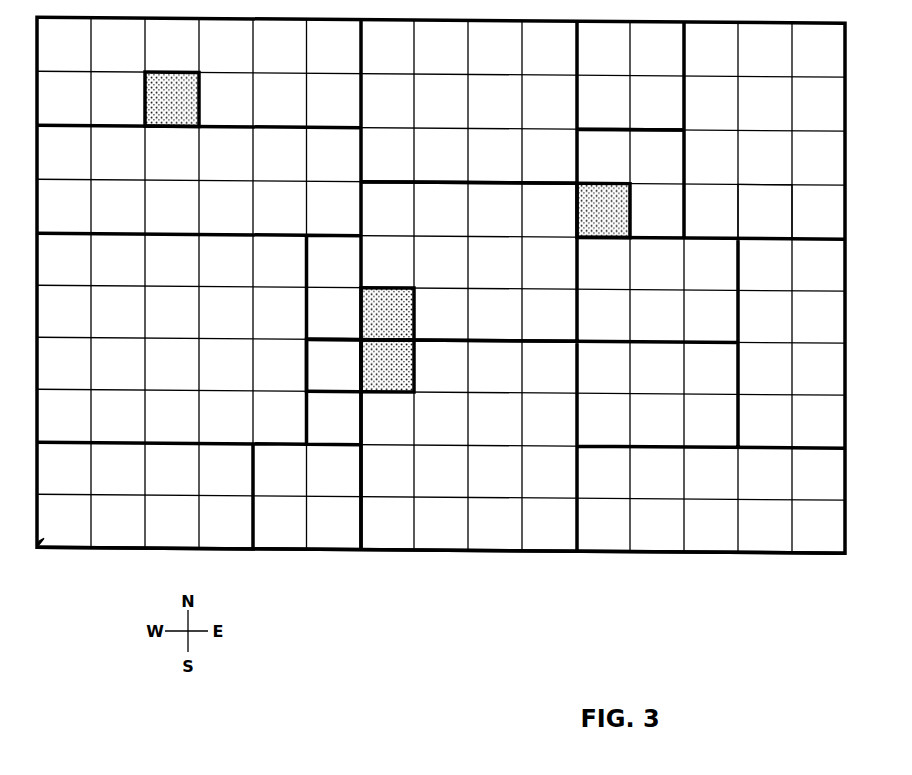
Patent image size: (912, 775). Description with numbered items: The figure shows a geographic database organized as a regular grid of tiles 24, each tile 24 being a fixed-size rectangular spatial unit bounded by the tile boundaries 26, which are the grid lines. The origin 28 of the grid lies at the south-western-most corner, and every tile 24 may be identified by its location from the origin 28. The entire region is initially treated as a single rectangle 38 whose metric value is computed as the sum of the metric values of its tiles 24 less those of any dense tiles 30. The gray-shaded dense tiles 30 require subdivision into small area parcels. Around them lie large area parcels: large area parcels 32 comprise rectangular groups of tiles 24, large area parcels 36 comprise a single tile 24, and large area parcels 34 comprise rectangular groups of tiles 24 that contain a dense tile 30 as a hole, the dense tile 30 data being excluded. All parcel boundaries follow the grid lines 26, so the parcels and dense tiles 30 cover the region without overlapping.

The tile 24 is at (433, 525).
The tile boundaries 26 is at (790, 200).
The origin 28 is at (41, 543).
The dense tile 30 is at (387, 310).
The large area parcel 32 is at (723, 509).
The large area parcel 34 is at (480, 454).
The large area parcel 36 is at (380, 418).
The rectangle 38 is at (632, 555).